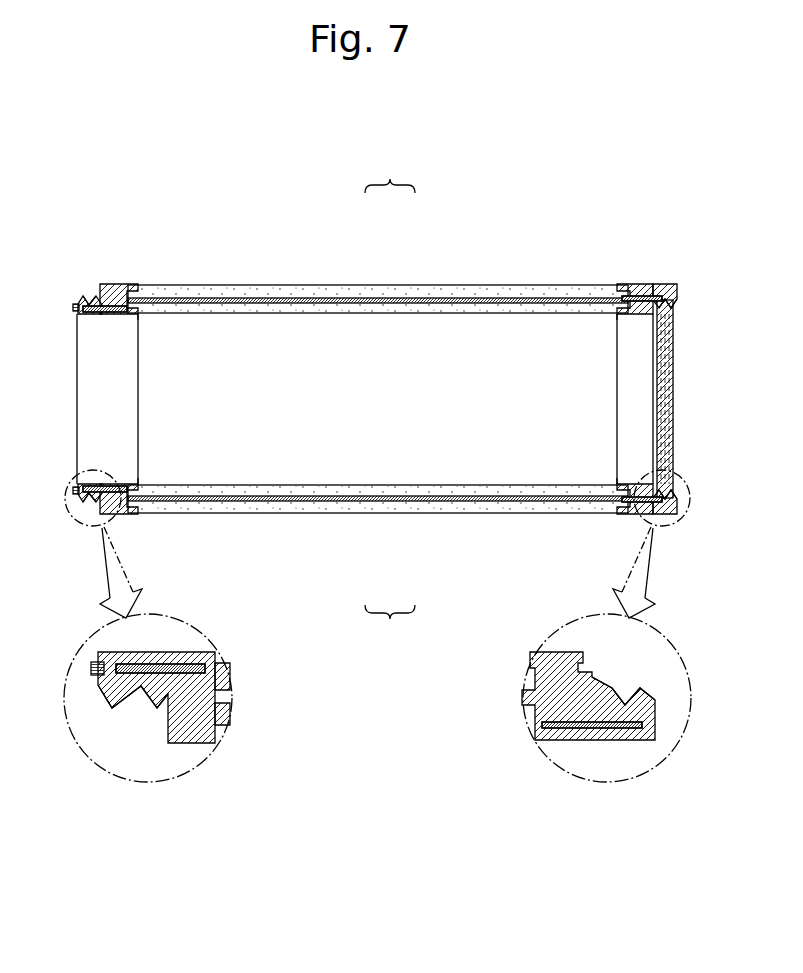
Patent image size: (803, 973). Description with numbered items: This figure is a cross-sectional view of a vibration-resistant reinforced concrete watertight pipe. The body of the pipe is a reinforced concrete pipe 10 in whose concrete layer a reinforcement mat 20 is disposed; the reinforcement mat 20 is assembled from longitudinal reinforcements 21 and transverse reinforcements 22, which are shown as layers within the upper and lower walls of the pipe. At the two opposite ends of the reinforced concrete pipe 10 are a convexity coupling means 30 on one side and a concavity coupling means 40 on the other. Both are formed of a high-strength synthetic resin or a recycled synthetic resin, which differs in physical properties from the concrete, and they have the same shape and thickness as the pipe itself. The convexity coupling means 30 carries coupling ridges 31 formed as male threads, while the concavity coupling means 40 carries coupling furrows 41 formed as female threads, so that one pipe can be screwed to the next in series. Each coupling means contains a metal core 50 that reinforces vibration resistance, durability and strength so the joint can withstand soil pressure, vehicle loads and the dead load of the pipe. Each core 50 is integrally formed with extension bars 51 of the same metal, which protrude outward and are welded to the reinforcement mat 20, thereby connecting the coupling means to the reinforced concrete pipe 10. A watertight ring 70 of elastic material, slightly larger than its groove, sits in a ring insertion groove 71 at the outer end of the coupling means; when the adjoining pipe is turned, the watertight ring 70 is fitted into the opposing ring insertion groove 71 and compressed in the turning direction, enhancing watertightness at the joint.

The reinforced concrete pipe 10 is at (290, 290).
The reinforcement mat 20 is at (390, 180).
The longitudinal reinforcements 21 is at (345, 297).
The transverse reinforcements 22 is at (434, 298).
The convexity coupling means 30 is at (124, 278).
The coupling ridges 31 is at (90, 297).
The concavity coupling means 40 is at (630, 278).
The coupling furrows 41 is at (677, 301).
The metal core 50 is at (100, 316).
The extension bars 51 is at (143, 316).
The watertight ring 70 is at (73, 307).
The ring insertion groove 71 is at (666, 326).